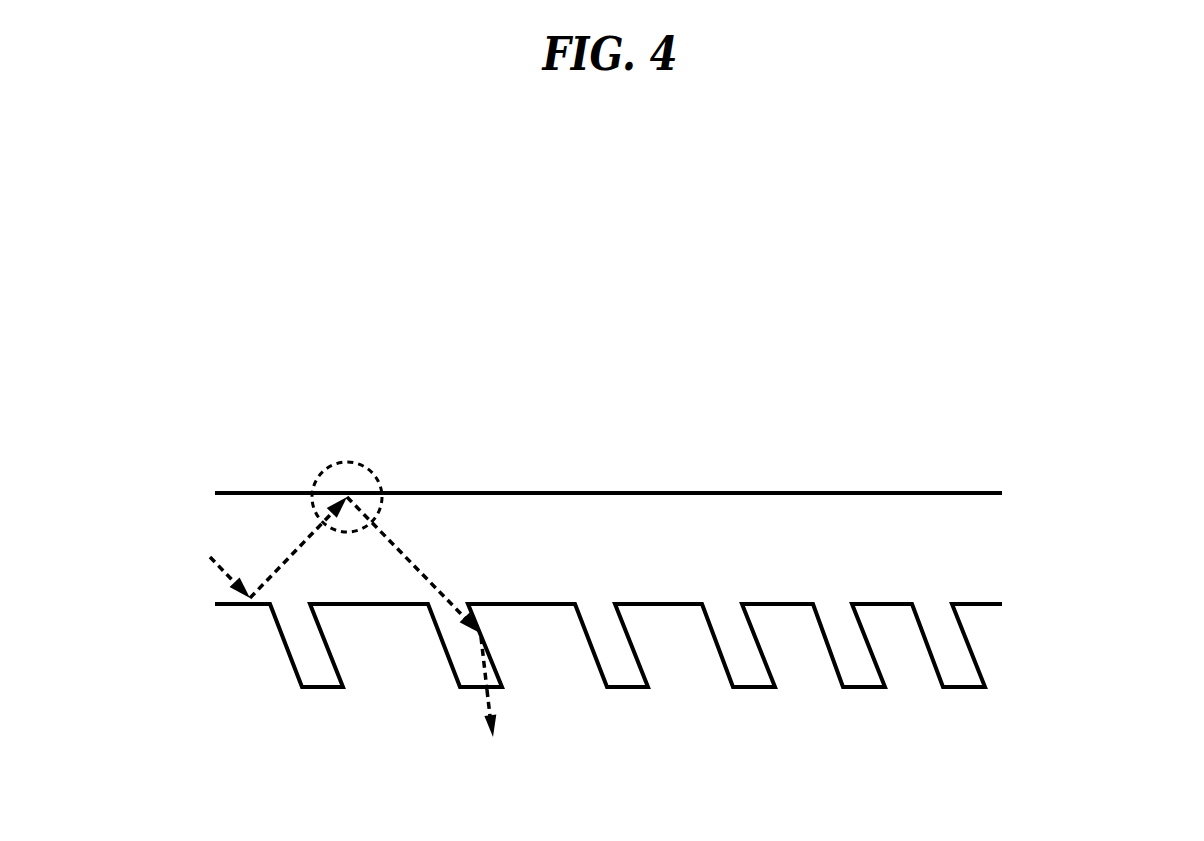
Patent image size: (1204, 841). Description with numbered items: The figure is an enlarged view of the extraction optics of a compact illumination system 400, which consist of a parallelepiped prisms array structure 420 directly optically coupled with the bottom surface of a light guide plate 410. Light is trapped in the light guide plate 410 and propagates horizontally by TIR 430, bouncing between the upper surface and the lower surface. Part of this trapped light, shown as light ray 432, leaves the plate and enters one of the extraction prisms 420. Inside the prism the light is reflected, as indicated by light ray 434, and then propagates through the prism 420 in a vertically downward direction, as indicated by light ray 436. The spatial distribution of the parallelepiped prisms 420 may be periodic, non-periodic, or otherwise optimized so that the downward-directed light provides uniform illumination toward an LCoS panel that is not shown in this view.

The compact illumination system 400 is at (1137, 343).
The light guide plate 410 is at (596, 474).
The parallelepiped prisms array structure 420 is at (608, 703).
The TIR 430 is at (368, 467).
The light ray 432 is at (425, 572).
The light ray 434 is at (480, 663).
The light ray 436 is at (495, 698).